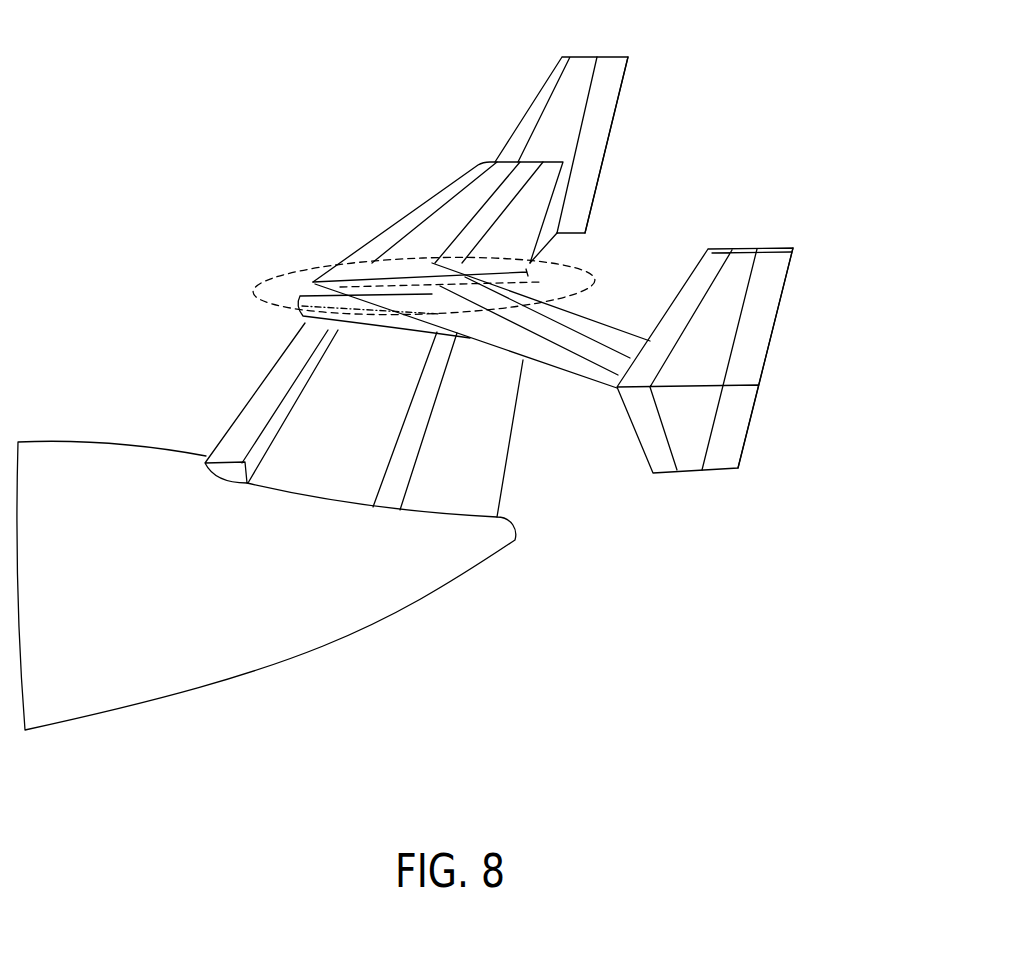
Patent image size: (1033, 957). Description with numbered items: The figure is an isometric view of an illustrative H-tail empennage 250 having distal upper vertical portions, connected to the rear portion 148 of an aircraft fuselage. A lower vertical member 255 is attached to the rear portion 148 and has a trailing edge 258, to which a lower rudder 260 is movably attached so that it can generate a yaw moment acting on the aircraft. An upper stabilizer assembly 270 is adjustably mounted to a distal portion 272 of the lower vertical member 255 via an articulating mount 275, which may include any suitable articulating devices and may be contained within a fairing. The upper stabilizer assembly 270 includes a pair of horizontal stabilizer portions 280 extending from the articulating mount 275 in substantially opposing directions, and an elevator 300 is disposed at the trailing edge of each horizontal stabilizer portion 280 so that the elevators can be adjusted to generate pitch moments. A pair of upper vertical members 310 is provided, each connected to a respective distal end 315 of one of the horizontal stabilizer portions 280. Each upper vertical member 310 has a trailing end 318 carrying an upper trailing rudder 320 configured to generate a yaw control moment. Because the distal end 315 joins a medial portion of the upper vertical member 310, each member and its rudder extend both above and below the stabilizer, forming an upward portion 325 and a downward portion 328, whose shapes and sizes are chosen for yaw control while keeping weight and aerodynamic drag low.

The rear portion 148 is at (222, 665).
The H-tail empennage 250 is at (158, 191).
The lower vertical member 255 is at (290, 447).
The trailing edge 258 is at (438, 460).
The lower rudder 260 is at (478, 443).
The upper stabilizer assembly 270 is at (346, 148).
The distal portion 272 is at (335, 355).
The articulating mount 275 is at (321, 236).
The horizontal stabilizer portions 280 is at (413, 227).
The elevator 300 is at (518, 233).
The upper vertical members 310 is at (583, 72).
The distal end 315 is at (475, 177).
The trailing end 318 is at (611, 76).
The upper trailing rudder 320 is at (590, 138).
The upward portion 325 is at (651, 126).
The downward portion 328 is at (611, 201).